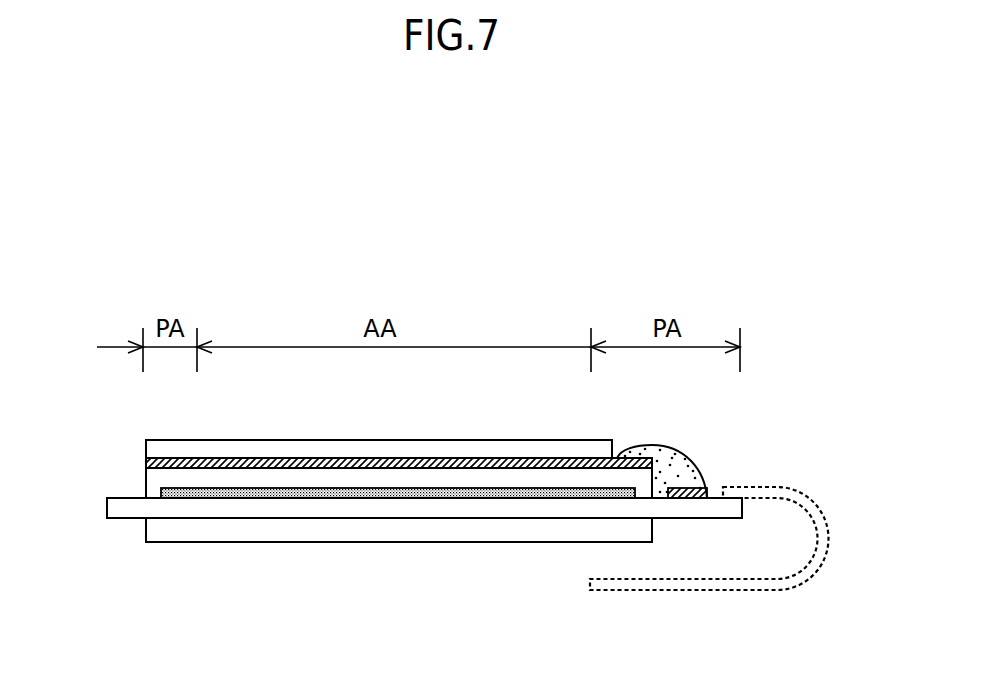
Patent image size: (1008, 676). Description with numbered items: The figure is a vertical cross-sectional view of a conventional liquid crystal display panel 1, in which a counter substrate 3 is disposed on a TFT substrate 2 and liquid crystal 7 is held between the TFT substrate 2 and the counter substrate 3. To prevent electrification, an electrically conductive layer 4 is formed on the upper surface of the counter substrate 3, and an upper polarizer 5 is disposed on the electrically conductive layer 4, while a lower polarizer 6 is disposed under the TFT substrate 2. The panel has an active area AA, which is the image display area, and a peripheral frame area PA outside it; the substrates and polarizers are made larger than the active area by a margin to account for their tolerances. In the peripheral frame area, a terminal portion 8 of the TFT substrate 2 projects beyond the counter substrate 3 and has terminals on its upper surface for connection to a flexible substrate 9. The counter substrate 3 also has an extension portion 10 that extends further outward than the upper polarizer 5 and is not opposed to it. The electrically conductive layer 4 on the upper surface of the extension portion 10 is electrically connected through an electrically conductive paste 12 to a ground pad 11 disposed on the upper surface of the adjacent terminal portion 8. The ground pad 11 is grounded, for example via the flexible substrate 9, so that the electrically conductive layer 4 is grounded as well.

The liquid crystal display panel 1 is at (593, 242).
The TFT substrate 2 is at (107, 510).
The counter substrate 3 is at (152, 480).
The electrically conductive layer 4 is at (150, 464).
The upper polarizer 5 is at (157, 450).
The lower polarizer 6 is at (146, 531).
The liquid crystal 7 is at (184, 498).
The terminal portion 8 is at (742, 422).
The flexible substrate 9 is at (823, 515).
The extension portion 10 is at (612, 422).
The ground pad 11 is at (704, 496).
The electrically conductive paste 12 is at (690, 481).